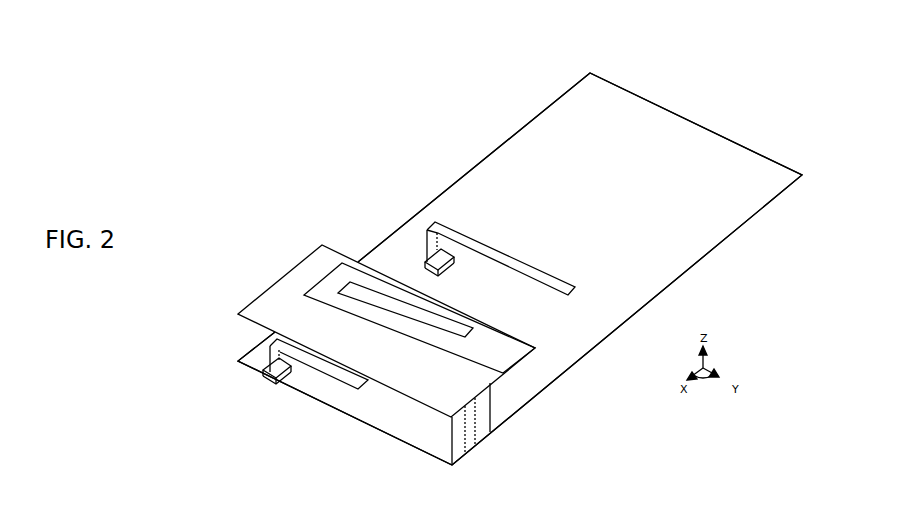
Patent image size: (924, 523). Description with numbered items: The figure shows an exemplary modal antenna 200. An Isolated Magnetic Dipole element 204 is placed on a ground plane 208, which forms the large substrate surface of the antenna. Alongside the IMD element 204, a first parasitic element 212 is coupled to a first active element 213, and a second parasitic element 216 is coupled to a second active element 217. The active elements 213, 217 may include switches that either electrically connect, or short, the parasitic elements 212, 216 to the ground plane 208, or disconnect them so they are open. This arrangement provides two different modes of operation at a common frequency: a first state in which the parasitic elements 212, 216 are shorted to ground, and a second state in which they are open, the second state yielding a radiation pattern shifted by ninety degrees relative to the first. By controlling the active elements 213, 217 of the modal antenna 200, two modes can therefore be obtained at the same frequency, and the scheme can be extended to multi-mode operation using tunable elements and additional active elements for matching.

The modal antenna 200 is at (707, 121).
The Isolated Magnetic Dipole element 204 is at (279, 311).
The ground plane 208 is at (678, 229).
The first parasitic element 212 is at (473, 228).
The first active element 213 is at (423, 255).
The second parasitic element 216 is at (331, 372).
The second active element 217 is at (268, 372).